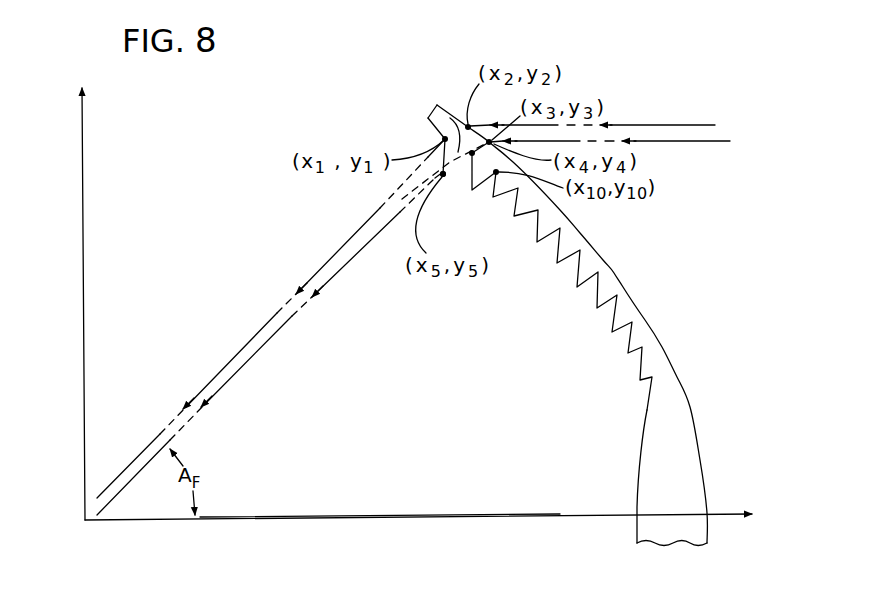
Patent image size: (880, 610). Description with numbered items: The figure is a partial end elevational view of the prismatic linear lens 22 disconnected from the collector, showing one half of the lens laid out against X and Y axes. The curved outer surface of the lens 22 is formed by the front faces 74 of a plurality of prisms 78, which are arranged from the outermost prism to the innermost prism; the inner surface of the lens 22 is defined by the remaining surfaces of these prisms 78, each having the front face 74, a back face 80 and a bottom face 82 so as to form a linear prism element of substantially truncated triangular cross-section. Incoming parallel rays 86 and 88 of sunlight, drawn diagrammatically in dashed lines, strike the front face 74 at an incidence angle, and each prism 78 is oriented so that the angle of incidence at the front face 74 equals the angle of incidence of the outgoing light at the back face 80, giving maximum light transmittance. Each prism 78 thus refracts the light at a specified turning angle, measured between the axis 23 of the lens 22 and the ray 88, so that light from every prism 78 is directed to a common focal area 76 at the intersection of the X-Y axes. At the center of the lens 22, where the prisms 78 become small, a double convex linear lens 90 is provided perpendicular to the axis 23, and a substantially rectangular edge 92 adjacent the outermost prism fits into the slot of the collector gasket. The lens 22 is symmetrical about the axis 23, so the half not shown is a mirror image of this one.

The prismatic linear lens 22 is at (616, 336).
The axis 23 is at (363, 518).
The front face 74 is at (491, 139).
The common focal area 76 is at (80, 515).
The prisms 78 is at (427, 115).
The back face 80 is at (418, 167).
The bottom face 82 is at (444, 177).
The incoming parallel ray 86 is at (707, 125).
The incoming parallel ray 88 is at (712, 142).
The double convex linear lens 90 is at (701, 460).
The substantially rectangular edge 92 is at (437, 105).